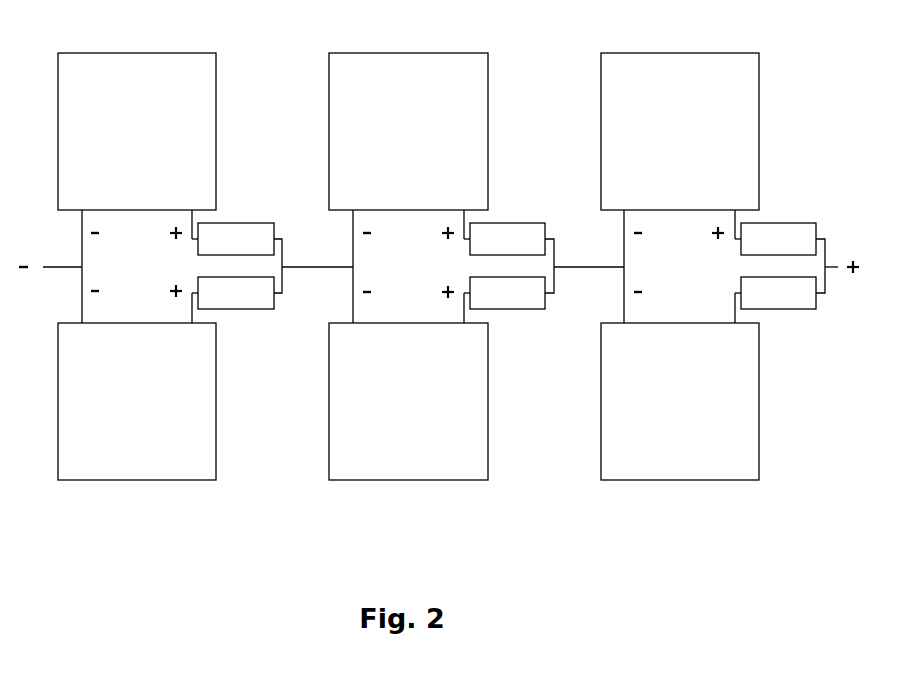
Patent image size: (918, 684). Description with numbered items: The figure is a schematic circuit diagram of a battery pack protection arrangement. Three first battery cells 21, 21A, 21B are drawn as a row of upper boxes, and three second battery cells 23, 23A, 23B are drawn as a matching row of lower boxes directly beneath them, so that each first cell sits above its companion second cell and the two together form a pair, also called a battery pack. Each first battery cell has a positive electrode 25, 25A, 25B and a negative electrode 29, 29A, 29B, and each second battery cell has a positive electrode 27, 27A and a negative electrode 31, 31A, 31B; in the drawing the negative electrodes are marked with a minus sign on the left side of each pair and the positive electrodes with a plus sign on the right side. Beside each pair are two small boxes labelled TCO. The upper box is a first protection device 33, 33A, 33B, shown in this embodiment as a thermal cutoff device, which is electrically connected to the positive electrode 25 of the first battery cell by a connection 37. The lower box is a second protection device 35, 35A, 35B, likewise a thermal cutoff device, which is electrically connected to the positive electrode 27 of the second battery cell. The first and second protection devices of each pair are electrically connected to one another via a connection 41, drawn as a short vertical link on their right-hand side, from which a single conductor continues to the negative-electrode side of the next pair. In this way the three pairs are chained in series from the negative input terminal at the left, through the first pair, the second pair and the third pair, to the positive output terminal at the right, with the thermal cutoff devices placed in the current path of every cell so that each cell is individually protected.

The first battery cell 21 is at (130, 63).
The first battery cell 21A is at (402, 63).
The first battery cell 21B is at (677, 63).
The second battery cell 23 is at (137, 467).
The second battery cell 23A is at (417, 467).
The second battery cell 23B is at (683, 467).
The positive electrode 25 is at (177, 225).
The positive electrode 25A is at (445, 228).
The positive electrode 25B is at (716, 228).
The positive electrode 27 is at (178, 302).
The positive electrode 27A is at (448, 303).
The negative electrode 29 is at (82, 233).
The negative electrode 29A is at (353, 233).
The negative electrode 29B is at (624, 233).
The negative electrode 31 is at (82, 291).
The negative electrode 31A is at (368, 300).
The negative electrode 31B is at (638, 300).
The first protection device 33 is at (248, 223).
The first protection device 33A is at (517, 223).
The first protection device 33B is at (810, 223).
The second protection device 35 is at (266, 309).
The second protection device 35A is at (538, 309).
The second protection device 35B is at (809, 309).
The connection 37 is at (195, 240).
The connection 41 is at (283, 248).